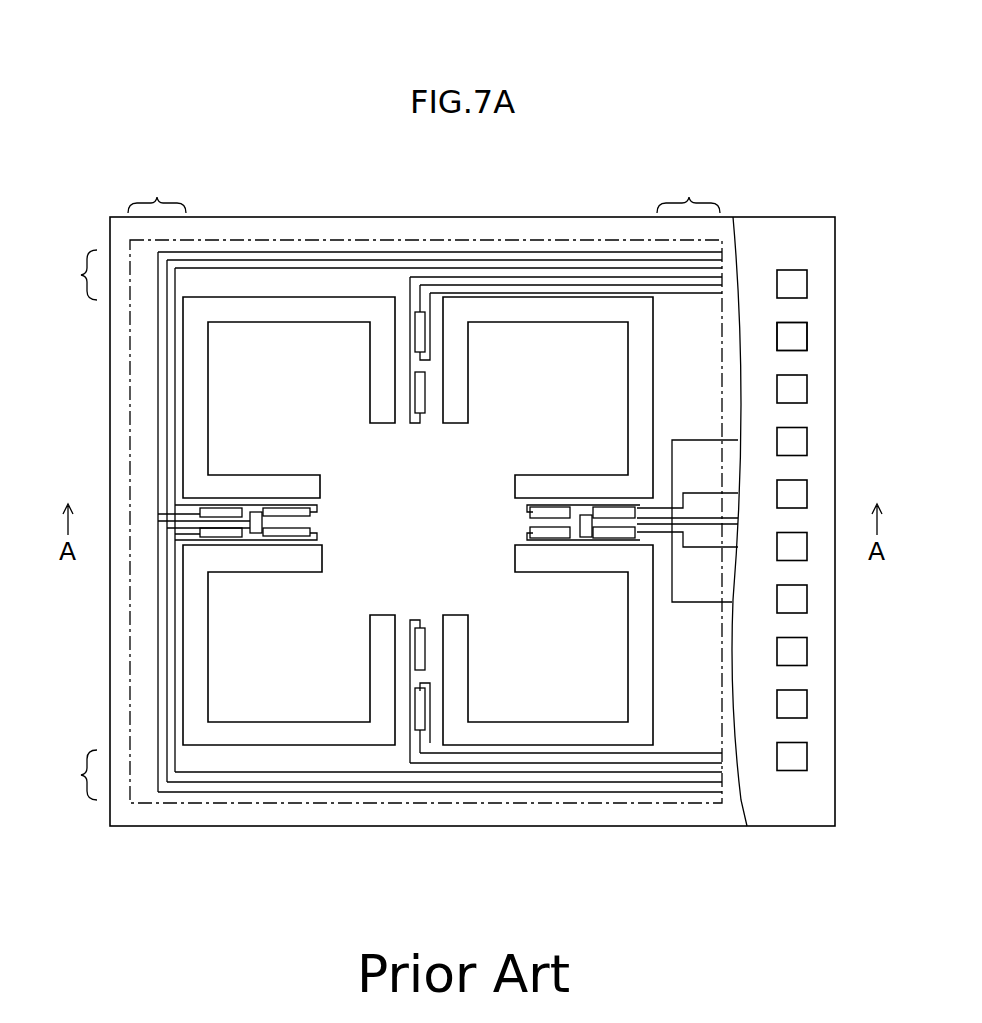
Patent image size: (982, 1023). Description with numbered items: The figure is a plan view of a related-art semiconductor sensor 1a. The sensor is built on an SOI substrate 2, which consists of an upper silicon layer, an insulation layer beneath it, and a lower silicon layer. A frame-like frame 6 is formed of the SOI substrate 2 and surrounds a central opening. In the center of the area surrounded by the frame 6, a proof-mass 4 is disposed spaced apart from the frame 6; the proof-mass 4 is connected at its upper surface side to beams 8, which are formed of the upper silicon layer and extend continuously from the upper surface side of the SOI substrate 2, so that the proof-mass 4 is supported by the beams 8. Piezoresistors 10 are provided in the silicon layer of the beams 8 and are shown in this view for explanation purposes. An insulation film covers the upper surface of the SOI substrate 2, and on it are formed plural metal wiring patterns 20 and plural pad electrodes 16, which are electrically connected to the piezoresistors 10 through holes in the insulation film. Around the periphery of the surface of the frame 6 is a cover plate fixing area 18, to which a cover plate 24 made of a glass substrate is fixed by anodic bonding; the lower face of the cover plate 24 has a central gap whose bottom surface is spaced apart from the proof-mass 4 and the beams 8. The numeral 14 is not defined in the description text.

The semiconductor sensor 1a is at (856, 214).
The SOI substrate 2 is at (781, 217).
The proof-mass 4 is at (478, 470).
The frame 6 is at (813, 274).
The beams 8 is at (431, 376).
The piezoresistors 10 is at (620, 506).
The wiring lines 14 is at (518, 293).
The pad electrodes 16 is at (795, 335).
The cover plate fixing area 18 is at (382, 484).
The metal wiring patterns 20 is at (697, 325).
The cover plate 24 is at (357, 240).